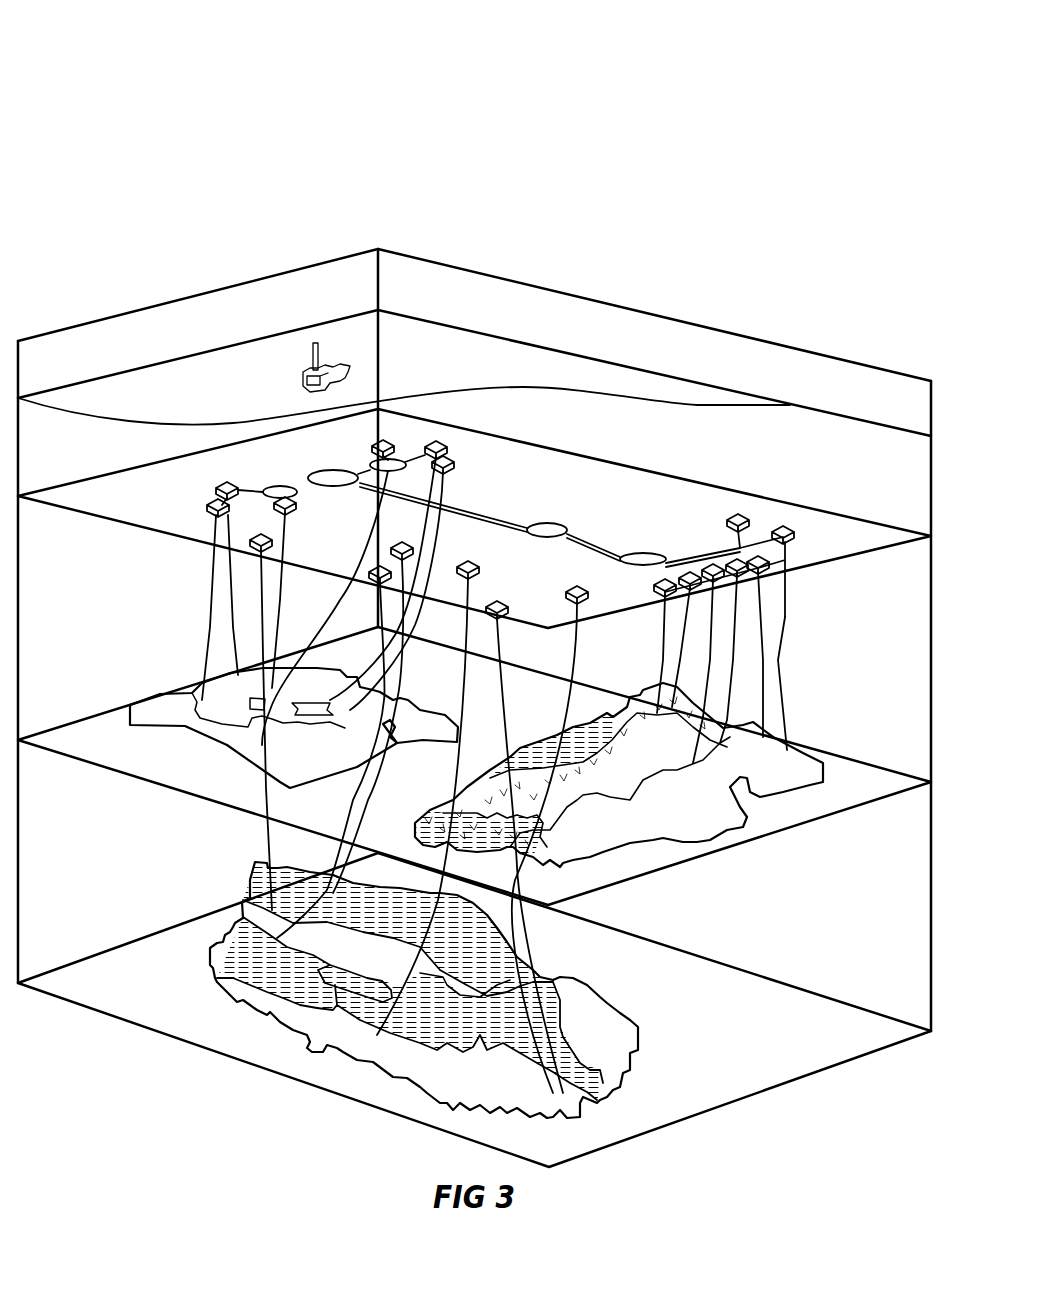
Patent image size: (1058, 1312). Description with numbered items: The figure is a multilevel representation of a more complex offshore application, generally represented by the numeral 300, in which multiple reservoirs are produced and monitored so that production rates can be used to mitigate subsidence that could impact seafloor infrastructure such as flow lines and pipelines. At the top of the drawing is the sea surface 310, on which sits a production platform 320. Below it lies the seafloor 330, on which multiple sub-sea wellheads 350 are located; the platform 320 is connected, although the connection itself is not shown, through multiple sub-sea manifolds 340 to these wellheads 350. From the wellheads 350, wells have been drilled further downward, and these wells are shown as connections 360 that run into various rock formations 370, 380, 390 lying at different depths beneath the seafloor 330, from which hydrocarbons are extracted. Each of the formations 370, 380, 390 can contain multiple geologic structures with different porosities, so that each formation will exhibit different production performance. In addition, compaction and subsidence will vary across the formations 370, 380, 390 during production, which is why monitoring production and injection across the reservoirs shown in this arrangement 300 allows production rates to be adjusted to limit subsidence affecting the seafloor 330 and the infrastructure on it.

The offshore application illustration 300 is at (138, 72).
The sea surface 310 is at (167, 378).
The production platform 320 is at (327, 373).
The seafloor 330 is at (159, 475).
The sub-sea manifolds 340 is at (542, 524).
The sub-sea wellheads 350 is at (793, 540).
The well connections 360 is at (213, 532).
The rock formation 370 is at (158, 692).
The rock formation 380 is at (807, 747).
The rock formation 390 is at (240, 917).